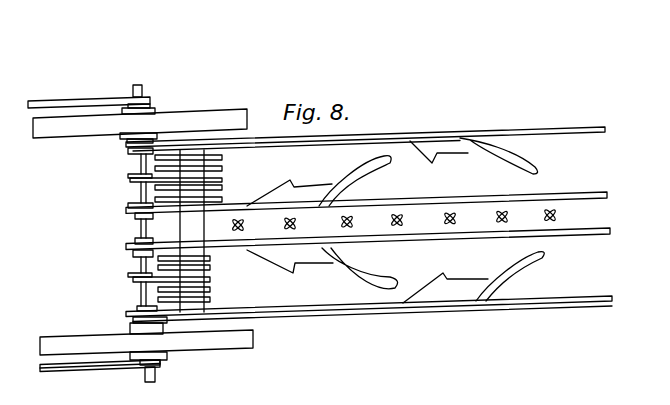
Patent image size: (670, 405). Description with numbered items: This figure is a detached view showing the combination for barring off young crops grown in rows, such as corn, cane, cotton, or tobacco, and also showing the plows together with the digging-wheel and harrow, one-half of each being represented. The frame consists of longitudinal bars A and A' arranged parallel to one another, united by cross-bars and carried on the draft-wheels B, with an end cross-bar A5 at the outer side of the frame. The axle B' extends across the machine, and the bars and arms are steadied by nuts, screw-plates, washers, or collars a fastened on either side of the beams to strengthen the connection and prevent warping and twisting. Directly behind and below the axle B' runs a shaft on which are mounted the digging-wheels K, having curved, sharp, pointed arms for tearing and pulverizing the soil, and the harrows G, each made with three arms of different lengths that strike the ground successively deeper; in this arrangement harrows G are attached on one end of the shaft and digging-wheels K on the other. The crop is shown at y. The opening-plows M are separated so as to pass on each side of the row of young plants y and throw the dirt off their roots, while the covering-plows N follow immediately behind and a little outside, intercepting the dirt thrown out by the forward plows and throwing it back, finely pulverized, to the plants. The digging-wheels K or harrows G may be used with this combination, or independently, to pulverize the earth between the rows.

The longitudinal bar A' is at (369, 219).
The longitudinal bar A is at (368, 215).
The end cross bars A5 is at (94, 236).
The draft-wheel B is at (143, 236).
The axle B' is at (164, 231).
The digging-wheel K is at (176, 176).
The harrow G is at (176, 277).
The opening-plow M is at (322, 223).
The covering-plow N is at (473, 220).
The collar a is at (141, 163).
The crop y is at (393, 220).